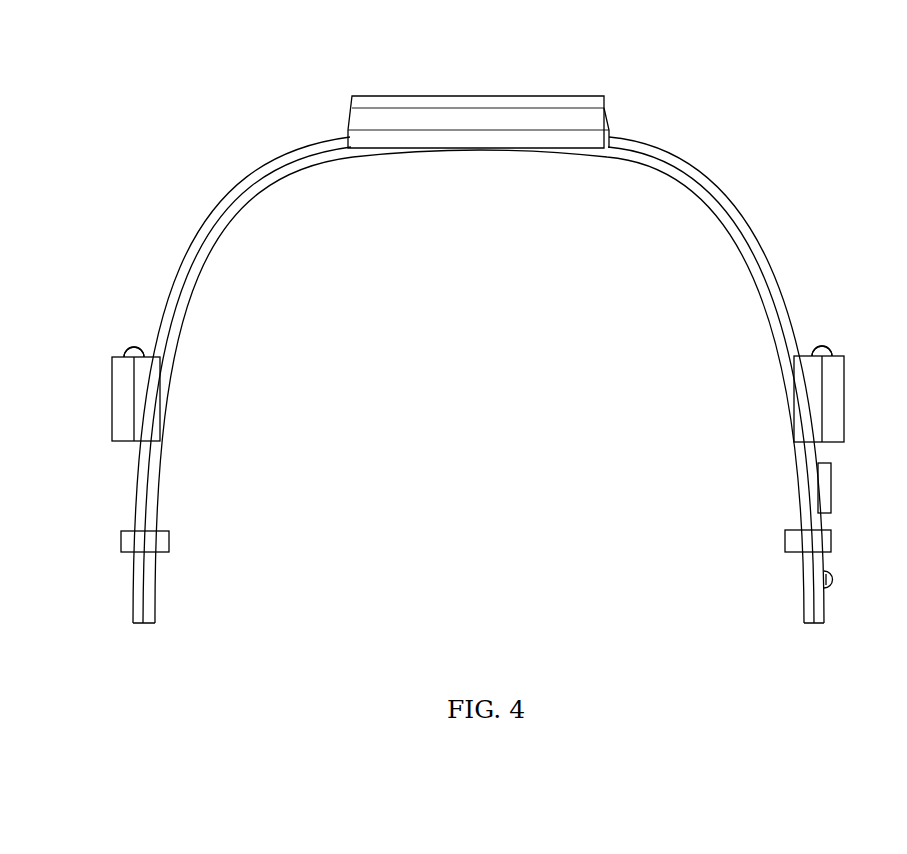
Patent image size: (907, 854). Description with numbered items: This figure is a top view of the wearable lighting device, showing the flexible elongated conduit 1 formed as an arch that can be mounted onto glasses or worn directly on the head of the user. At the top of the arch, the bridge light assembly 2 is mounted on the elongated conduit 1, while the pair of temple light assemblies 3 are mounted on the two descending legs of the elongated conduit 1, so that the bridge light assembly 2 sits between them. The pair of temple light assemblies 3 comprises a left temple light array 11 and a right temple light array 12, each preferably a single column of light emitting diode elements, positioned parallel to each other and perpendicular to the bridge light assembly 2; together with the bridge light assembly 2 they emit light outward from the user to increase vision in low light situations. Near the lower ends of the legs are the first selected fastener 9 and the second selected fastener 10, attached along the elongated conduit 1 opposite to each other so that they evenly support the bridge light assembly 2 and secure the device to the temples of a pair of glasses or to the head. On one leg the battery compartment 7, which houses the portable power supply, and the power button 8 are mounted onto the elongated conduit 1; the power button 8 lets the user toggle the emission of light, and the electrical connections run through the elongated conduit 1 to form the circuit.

The elongated conduit 1 is at (235, 194).
The bridge light assembly 2 is at (483, 140).
The pair of temple light assemblies 3 is at (124, 397).
The battery compartment 7 is at (828, 484).
The power button 8 is at (831, 582).
The first selected fastener 9 is at (128, 543).
The second selected fastener 10 is at (795, 546).
The left temple light array 11 is at (133, 346).
The right temple light array 12 is at (821, 347).